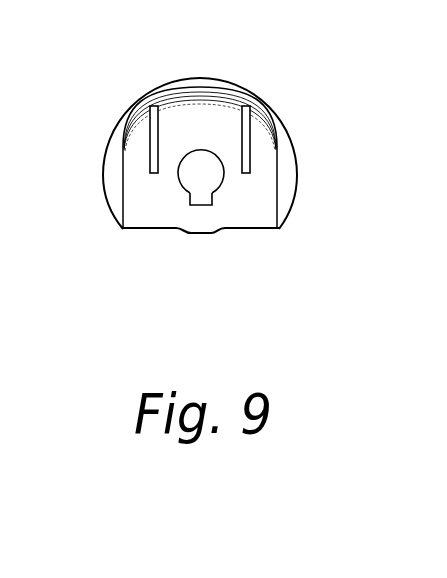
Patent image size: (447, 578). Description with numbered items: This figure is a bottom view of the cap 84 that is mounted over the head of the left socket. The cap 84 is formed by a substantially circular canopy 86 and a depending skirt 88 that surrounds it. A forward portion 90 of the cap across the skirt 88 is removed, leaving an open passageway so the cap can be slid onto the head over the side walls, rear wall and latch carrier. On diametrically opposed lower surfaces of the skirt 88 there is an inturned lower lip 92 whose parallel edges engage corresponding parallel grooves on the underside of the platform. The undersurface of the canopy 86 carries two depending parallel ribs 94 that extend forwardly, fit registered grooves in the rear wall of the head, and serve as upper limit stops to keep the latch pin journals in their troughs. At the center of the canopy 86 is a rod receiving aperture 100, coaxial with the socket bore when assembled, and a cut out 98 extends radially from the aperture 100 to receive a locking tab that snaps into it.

The cap 84 is at (100, 126).
The canopy 86 is at (252, 215).
The skirt 88 is at (275, 113).
The forward portion 90 is at (161, 278).
The inturned lower lip 92 is at (110, 193).
The ribs 94 is at (244, 106).
The cut out 98 is at (214, 203).
The central rod receiving aperture 100 is at (214, 177).